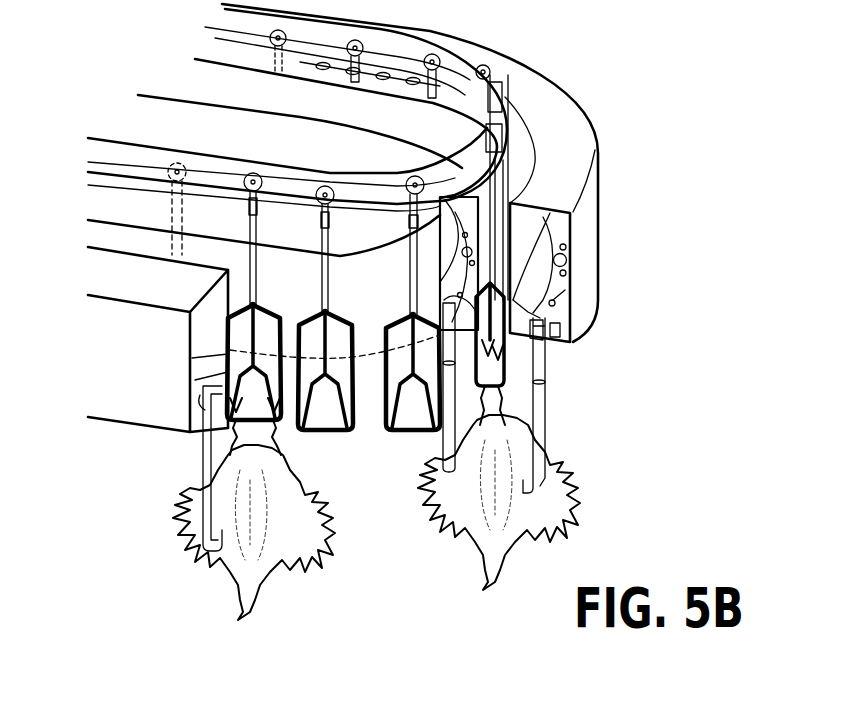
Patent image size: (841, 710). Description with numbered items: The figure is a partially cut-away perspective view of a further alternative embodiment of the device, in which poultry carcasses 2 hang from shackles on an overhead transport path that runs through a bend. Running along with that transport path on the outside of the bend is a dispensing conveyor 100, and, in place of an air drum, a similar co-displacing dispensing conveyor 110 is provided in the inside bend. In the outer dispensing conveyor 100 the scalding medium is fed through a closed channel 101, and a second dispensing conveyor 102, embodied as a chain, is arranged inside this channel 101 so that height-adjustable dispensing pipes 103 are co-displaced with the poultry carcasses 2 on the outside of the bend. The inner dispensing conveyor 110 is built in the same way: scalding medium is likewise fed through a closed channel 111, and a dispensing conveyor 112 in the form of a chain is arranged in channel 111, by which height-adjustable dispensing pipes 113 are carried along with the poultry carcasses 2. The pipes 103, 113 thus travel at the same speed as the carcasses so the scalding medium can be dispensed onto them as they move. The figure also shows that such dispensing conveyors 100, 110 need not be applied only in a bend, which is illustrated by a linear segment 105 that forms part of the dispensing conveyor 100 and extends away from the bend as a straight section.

The poultry carcass 2 is at (258, 577).
The dispensing conveyor 100 is at (587, 335).
The closed channel 101 is at (576, 226).
The second dispensing conveyor 102 is at (574, 283).
The height-adjustable dispensing pipe 103 is at (547, 440).
The linear segment 105 is at (118, 428).
The dispensing conveyor 110 is at (437, 254).
The closed channel 111 is at (455, 212).
The dispensing conveyor 112 is at (441, 302).
The height-adjustable dispensing pipe 113 is at (445, 436).